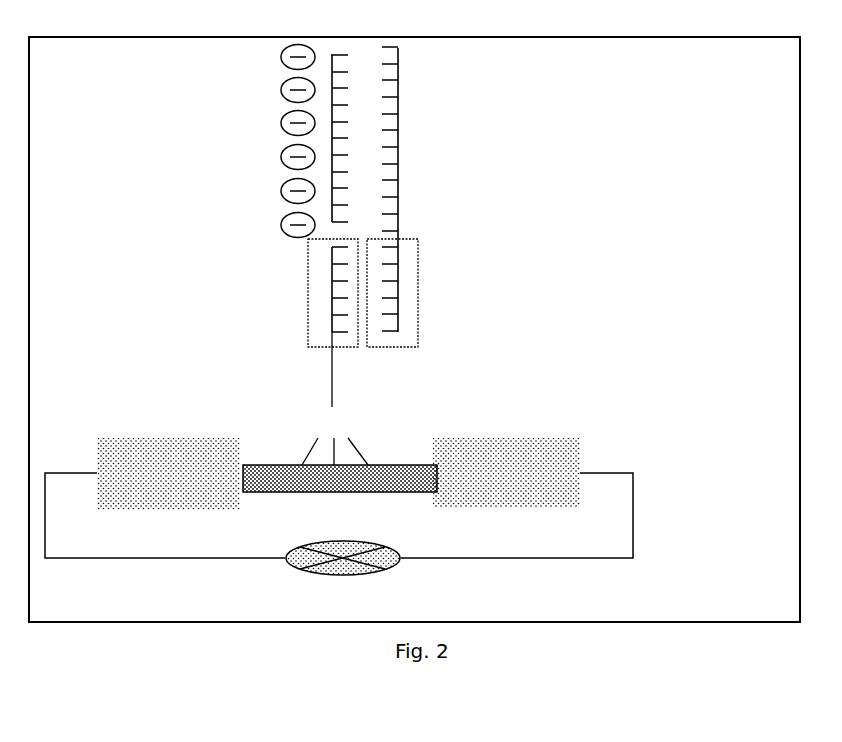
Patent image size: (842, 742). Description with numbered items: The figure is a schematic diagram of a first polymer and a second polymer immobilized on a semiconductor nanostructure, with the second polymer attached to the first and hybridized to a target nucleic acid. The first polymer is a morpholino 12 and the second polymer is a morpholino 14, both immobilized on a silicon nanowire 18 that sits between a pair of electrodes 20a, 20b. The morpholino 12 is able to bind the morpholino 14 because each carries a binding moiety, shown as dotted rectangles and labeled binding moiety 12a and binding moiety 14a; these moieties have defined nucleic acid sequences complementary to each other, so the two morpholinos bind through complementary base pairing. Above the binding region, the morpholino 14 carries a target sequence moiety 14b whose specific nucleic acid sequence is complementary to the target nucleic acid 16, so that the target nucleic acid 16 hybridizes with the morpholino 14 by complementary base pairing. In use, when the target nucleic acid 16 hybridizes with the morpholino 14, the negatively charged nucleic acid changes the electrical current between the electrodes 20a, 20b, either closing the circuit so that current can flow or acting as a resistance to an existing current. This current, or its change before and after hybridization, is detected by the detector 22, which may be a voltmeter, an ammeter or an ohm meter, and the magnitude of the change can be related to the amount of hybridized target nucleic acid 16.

The morpholino 12 is at (285, 259).
The binding moiety 12a is at (304, 298).
The morpholino 14 is at (506, 197).
The binding moiety 14a is at (444, 293).
The target sequence moiety 14b is at (421, 106).
The target nucleic acid 16 is at (253, 89).
The silicon nanowire 18 is at (398, 469).
The electrode 20a is at (168, 474).
The electrode 20b is at (506, 473).
The detector 22 is at (397, 575).